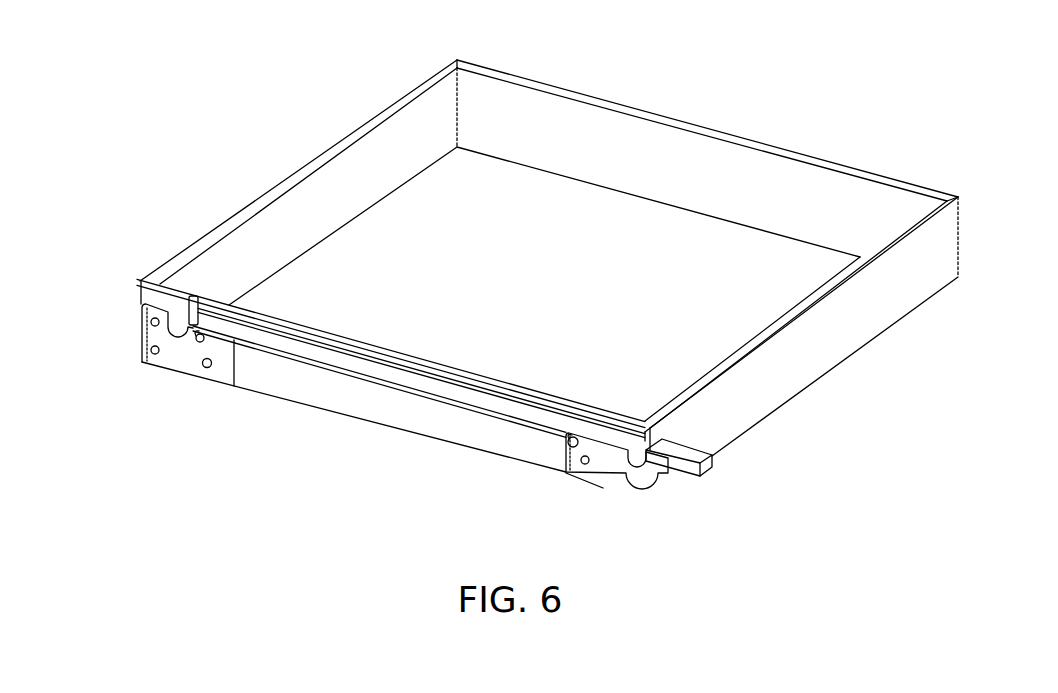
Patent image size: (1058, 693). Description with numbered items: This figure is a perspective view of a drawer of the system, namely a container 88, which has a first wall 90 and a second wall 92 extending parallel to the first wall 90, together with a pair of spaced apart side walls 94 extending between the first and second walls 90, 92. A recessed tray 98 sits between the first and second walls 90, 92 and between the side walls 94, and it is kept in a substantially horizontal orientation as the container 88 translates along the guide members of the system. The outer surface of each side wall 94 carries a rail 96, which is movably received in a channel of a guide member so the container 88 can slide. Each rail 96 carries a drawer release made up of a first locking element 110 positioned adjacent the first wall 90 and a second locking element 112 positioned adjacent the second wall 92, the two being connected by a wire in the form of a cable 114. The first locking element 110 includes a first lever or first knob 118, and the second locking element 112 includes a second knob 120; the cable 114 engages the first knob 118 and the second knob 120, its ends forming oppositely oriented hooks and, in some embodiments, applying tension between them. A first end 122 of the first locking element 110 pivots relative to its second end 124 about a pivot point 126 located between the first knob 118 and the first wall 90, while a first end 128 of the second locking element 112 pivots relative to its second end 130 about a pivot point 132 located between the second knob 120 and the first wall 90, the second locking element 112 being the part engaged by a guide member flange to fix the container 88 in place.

The container 88 is at (497, 388).
The first wall 90 is at (795, 357).
The second wall 92 is at (310, 197).
The side walls 94 is at (615, 125).
The rail 96 is at (412, 352).
The recessed tray 98 is at (530, 236).
The first locking element 110 is at (563, 450).
The second locking element 112 is at (172, 364).
The cable 114 is at (394, 390).
The first knob 118 is at (572, 435).
The second knob 120 is at (190, 295).
The first end 122 is at (690, 453).
The second end 124 is at (572, 462).
The pivot point 126 is at (586, 464).
The first end 128 is at (140, 328).
The second end 130 is at (236, 348).
The pivot point 132 is at (205, 370).